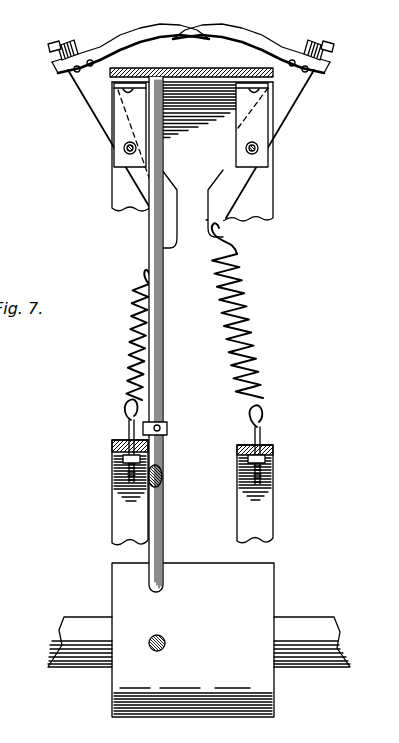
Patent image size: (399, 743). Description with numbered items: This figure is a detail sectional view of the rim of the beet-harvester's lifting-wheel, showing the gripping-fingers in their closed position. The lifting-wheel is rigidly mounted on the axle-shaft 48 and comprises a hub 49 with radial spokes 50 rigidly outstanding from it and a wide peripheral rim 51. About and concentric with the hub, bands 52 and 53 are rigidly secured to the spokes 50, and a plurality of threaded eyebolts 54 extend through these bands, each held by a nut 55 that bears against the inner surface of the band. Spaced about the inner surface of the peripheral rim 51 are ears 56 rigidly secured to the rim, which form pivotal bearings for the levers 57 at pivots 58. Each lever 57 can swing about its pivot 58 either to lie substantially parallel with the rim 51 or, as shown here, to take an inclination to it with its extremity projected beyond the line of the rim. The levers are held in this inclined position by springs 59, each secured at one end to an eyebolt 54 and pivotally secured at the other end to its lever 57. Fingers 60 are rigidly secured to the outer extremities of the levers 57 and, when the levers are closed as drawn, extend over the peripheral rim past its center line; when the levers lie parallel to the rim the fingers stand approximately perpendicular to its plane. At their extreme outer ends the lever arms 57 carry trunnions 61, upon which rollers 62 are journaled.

The axle-shaft 48 is at (78, 667).
The hub 49 is at (203, 713).
The radial spokes 50 is at (164, 549).
The peripheral rim 51 is at (183, 71).
The band 52 is at (263, 506).
The band 53 is at (120, 502).
The threaded eyebolt 54 is at (129, 437).
The nut 55 is at (123, 458).
The ear 56 is at (122, 131).
The lever 57 is at (95, 110).
The pivot 58 is at (126, 154).
The spring 59 is at (131, 338).
The finger 60 is at (105, 52).
The trunnion 61 is at (53, 44).
The roller 62 is at (61, 60).